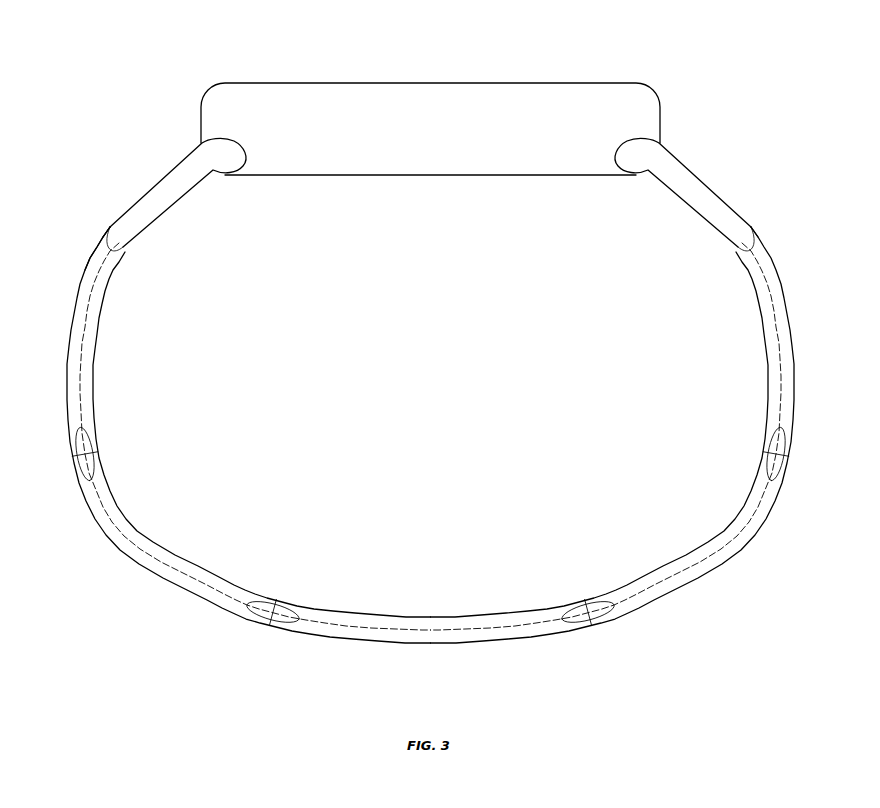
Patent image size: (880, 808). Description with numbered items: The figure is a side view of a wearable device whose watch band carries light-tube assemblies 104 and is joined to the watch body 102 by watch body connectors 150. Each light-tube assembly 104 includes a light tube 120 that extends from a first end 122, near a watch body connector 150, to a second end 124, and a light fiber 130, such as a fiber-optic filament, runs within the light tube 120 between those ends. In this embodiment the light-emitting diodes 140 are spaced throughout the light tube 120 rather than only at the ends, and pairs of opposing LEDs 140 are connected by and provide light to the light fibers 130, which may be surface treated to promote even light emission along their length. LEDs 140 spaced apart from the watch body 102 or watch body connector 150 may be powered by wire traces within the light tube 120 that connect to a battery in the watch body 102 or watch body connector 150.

The watch body 102 is at (410, 102).
The light-tube assembly 104 is at (85, 229).
The light tube 120 is at (77, 295).
The first end 122 is at (110, 227).
The second end 124 is at (751, 227).
The light fiber 130 is at (92, 392).
The light-emitting diode 140 is at (125, 249).
The watch body connector 150 is at (162, 187).